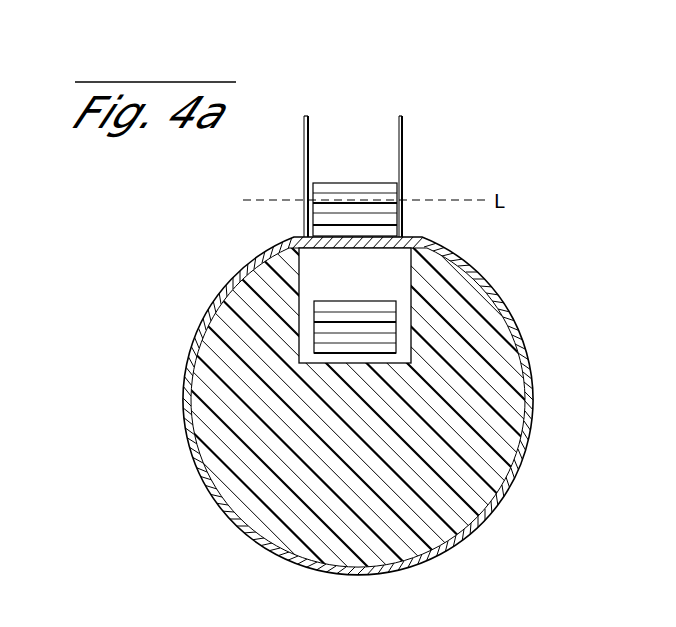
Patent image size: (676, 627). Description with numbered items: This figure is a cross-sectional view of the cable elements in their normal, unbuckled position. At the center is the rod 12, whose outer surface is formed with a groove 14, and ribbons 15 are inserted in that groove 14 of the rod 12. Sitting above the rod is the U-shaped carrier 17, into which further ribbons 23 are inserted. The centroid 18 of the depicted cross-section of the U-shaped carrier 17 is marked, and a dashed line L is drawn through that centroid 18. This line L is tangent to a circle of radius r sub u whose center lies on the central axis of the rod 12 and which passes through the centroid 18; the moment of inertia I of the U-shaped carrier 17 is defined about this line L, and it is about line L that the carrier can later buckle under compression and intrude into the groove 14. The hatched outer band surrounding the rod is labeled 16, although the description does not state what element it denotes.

The rod 12 is at (215, 410).
The groove 14 is at (310, 343).
The ribbons 15 is at (345, 315).
The outer sheath 16 is at (192, 462).
The U-shaped carrier 17 is at (304, 160).
The centroid 18 is at (503, 151).
The ribbons 23 is at (313, 186).